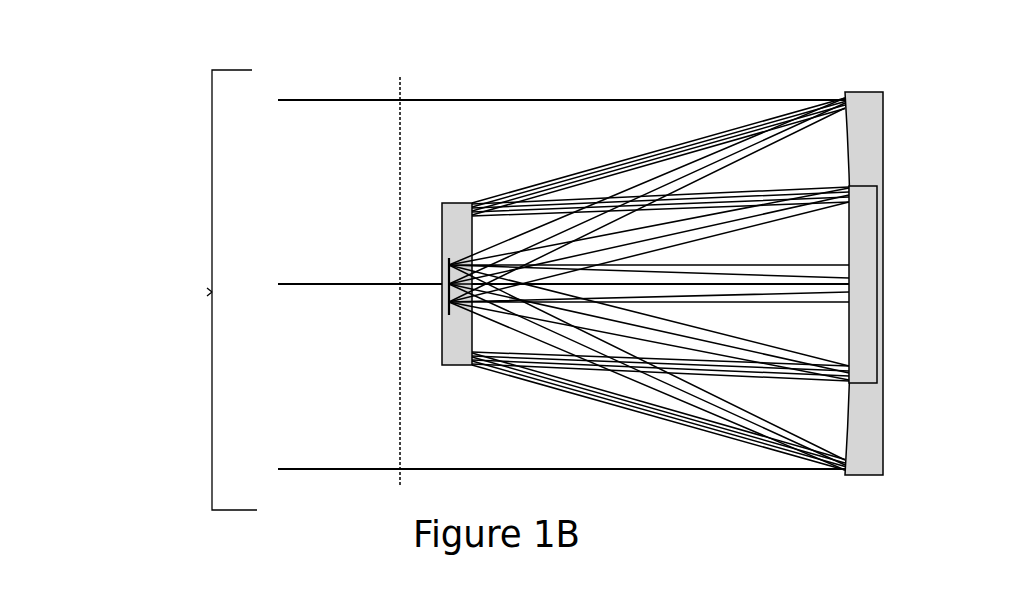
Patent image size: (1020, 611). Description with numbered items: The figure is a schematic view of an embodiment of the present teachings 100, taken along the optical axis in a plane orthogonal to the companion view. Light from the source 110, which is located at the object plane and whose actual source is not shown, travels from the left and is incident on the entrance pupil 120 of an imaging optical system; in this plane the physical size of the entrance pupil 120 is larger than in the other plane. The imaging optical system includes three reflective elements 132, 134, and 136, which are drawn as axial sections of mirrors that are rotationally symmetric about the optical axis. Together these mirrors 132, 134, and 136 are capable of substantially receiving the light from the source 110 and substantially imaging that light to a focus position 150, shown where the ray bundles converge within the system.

The embodiment of the present teachings 100 is at (124, 92).
The source 110 is at (208, 292).
The entrance pupil 120 is at (400, 78).
The reflective element 132 is at (886, 120).
The reflective element 134 is at (442, 233).
The reflective element 136 is at (878, 323).
The focus position 150 is at (443, 306).